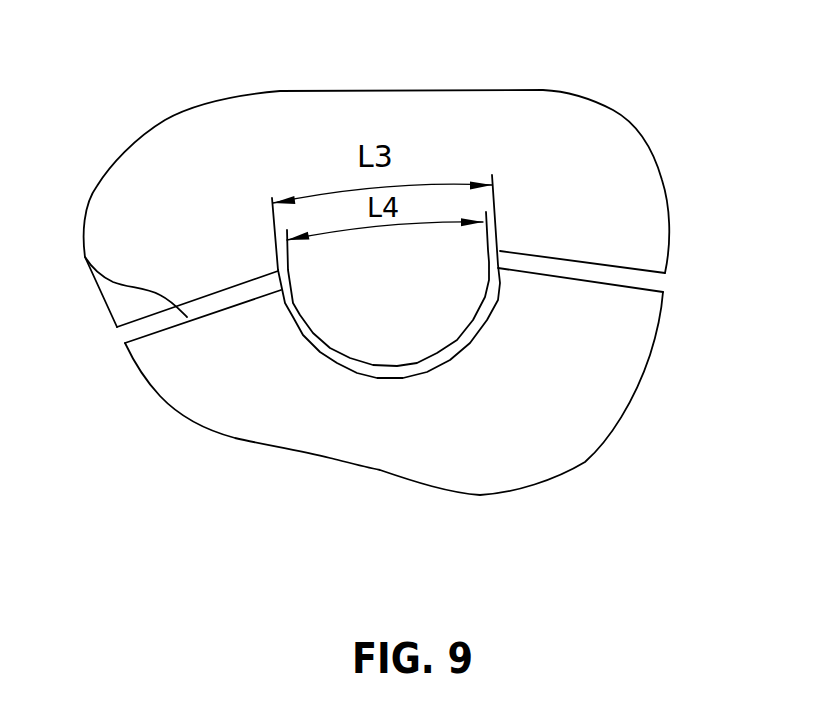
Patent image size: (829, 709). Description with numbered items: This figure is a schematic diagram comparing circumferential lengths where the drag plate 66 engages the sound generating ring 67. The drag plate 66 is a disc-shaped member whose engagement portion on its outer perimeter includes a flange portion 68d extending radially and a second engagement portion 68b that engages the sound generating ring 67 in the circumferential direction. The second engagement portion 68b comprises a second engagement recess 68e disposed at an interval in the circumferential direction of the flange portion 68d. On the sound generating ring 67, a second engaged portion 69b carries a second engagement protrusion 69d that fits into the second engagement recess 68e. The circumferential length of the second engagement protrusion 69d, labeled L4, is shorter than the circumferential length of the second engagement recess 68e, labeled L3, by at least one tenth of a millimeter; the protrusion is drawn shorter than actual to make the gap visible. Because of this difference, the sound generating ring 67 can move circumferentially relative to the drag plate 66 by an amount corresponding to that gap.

The drag plate 66 is at (597, 465).
The sound generating ring 67 is at (652, 125).
The second engagement portion 68b is at (474, 313).
The flange portion 68d is at (85, 257).
The second engagement recess 68e is at (337, 368).
The second engaged portion 69b is at (473, 346).
The second engagement protrusion 69d is at (427, 359).